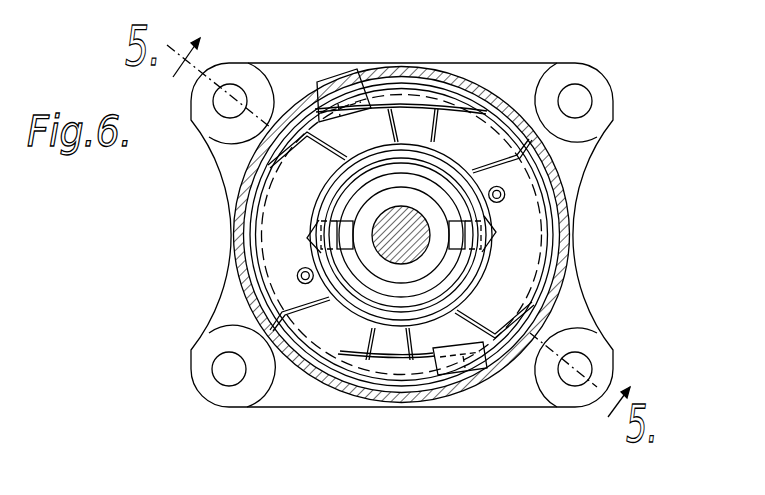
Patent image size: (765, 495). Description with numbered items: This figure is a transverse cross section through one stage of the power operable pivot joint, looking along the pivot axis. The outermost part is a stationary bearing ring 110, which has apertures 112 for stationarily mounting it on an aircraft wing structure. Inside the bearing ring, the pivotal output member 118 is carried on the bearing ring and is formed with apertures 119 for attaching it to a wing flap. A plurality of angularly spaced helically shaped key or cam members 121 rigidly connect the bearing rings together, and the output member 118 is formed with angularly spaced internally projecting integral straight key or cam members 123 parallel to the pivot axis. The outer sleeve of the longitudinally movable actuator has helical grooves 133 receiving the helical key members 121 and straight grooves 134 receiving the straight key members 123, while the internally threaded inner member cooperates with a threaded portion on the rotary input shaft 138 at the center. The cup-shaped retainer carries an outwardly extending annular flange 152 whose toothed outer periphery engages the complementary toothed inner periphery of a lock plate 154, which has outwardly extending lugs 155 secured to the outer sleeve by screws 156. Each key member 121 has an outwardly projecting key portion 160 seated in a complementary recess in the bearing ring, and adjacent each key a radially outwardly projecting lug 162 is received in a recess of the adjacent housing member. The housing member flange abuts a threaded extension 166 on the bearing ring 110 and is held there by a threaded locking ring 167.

The stationary bearing ring 110 is at (233, 153).
The aperture 112 is at (214, 118).
The output member 118 is at (573, 302).
The aperture 119 is at (590, 118).
The helically shaped key or cam member 121 is at (376, 122).
The straight key or cam member 123 is at (472, 140).
The helical groove 133 is at (363, 140).
The straight groove 134 is at (450, 150).
The rotary input shaft 138 is at (400, 268).
The annular flange 152 is at (452, 285).
The lock plate 154 is at (401, 236).
The lug 155 is at (300, 272).
The screw 156 is at (255, 284).
The key portion 160 is at (340, 75).
The lug 162 is at (350, 137).
The threaded extension 166 is at (318, 203).
The threaded locking ring 167 is at (305, 220).